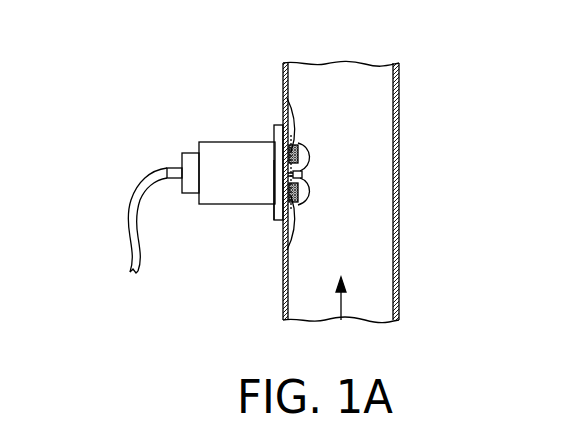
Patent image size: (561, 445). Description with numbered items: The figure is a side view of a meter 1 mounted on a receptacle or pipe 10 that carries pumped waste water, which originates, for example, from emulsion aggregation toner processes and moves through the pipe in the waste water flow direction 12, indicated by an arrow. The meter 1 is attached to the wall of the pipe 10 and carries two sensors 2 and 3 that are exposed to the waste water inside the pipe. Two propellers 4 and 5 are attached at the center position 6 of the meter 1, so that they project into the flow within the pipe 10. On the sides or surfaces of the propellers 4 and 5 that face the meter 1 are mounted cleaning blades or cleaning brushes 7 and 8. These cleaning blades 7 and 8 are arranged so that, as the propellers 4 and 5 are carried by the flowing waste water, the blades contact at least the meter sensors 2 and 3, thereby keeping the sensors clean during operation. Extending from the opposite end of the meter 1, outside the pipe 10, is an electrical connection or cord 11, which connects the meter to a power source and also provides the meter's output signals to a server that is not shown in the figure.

The meter 1 is at (224, 197).
The sensor 2 is at (290, 156).
The sensor 3 is at (275, 194).
The propeller 4 is at (309, 193).
The propeller 5 is at (308, 152).
The center position 6 is at (303, 173).
The cleaning blade or cleaning brush 7 is at (286, 118).
The cleaning blade or cleaning brush 8 is at (288, 243).
The receptacle or pipe 10 is at (399, 152).
The electrical connection or cord 11 is at (128, 226).
The waste water flow direction 12 is at (342, 303).